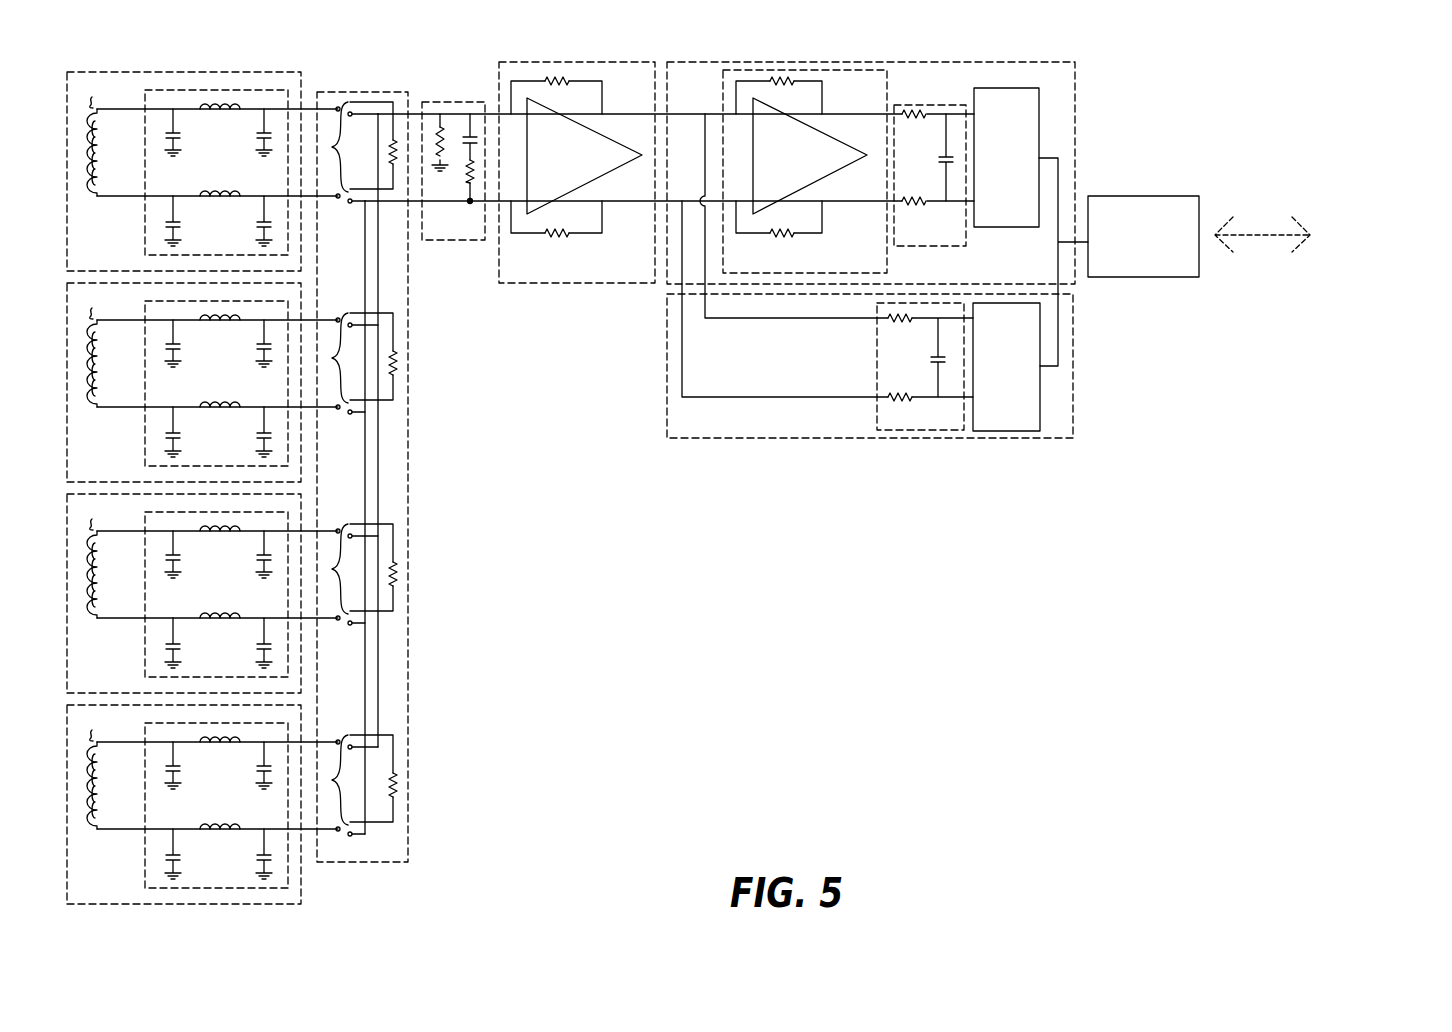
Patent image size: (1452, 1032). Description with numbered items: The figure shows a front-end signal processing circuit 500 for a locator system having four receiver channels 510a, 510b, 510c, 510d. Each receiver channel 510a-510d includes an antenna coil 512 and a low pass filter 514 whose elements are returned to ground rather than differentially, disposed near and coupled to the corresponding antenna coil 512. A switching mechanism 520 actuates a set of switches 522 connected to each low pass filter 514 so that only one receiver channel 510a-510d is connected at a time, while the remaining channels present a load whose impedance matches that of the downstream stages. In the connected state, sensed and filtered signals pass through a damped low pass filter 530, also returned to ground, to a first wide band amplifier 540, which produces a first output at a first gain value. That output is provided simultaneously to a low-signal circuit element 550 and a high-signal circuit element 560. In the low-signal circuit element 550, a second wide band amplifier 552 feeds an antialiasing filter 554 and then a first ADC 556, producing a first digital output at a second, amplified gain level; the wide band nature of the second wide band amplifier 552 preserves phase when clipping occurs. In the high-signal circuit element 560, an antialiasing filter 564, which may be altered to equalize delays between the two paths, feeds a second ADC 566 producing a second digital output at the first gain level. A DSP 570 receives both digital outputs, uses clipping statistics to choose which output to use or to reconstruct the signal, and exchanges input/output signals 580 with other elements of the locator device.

The front-end signal processing circuit 500 is at (1315, 72).
The receiver channel 510a is at (125, 263).
The receiver channel 510b is at (125, 474).
The receiver channel 510c is at (125, 685).
The receiver channel 510d is at (125, 896).
The antenna coil 512 is at (99, 452).
The low pass filter 514 is at (238, 248).
The switching mechanism 520 is at (403, 858).
The switches 522 is at (362, 469).
The damped low pass filter 530 is at (478, 233).
The first wide band amplifier 540 is at (647, 276).
The low-signal circuit element 550 is at (710, 90).
The second wide band amplifier 552 is at (878, 268).
The antialiasing filter 554 is at (958, 243).
The first ADC 556 is at (1031, 225).
The high-signal circuit element 560 is at (714, 430).
The antialiasing filter 564 is at (958, 425).
The second ADC 566 is at (1030, 425).
The DSP 570 is at (1192, 276).
The input/output signals 580 is at (1262, 280).